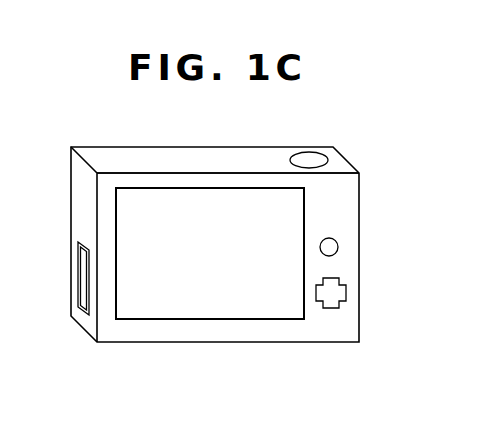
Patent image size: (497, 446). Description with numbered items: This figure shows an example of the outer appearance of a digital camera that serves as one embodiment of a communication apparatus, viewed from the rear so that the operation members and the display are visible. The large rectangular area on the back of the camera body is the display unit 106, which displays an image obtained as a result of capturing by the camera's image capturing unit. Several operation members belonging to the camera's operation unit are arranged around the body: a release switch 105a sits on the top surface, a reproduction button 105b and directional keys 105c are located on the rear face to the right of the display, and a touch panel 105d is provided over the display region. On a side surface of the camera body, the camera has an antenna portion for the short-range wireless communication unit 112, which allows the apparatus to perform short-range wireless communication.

The display unit 106 is at (253, 193).
The release switch 105a is at (307, 160).
The reproduction button 105b is at (338, 246).
The directional keys 105c is at (344, 290).
The touch panel 105d is at (147, 187).
The short-range wireless communication unit 112 is at (83, 282).